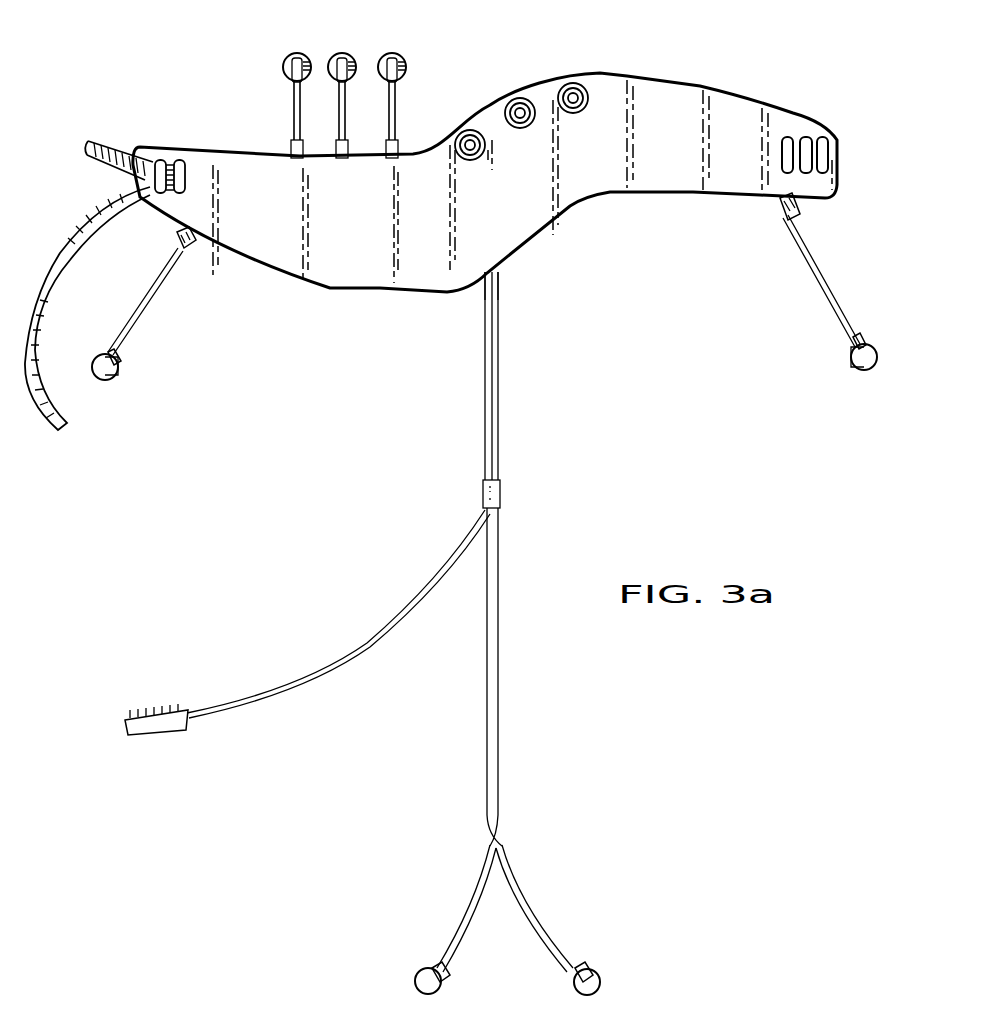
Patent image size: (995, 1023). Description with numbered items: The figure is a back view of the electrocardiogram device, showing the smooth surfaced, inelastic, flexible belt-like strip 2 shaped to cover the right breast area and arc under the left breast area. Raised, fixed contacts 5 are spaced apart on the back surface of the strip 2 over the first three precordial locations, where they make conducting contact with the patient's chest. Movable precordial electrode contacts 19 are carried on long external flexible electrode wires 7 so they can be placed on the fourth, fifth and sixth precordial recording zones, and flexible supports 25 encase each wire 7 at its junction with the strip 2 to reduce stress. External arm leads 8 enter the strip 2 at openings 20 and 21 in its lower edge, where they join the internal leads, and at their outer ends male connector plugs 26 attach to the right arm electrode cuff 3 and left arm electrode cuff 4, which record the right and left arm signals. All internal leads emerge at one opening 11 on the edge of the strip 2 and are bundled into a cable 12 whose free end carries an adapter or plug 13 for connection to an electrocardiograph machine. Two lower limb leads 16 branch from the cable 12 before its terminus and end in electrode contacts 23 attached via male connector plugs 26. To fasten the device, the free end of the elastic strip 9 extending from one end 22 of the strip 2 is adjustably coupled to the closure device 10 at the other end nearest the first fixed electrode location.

The belt-like strip 2 is at (553, 205).
The right arm electrode cuff 3 is at (851, 364).
The left arm electrode cuff 4 is at (106, 382).
The fixed contacts 5 is at (470, 150).
The external flexible electrode wires 7 is at (293, 98).
The external arm leads 8 is at (140, 297).
The elastic strip 9 is at (82, 215).
The closure device 10 is at (805, 140).
The opening 11 is at (478, 285).
The cable 12 is at (500, 322).
The adapter or plug 13 is at (180, 708).
The lower limb leads 16 is at (487, 688).
The movable precordial electrode contacts 19 is at (285, 64).
The opening 20 is at (782, 220).
The opening 21 is at (190, 246).
The end of the belt-like strip 22 is at (160, 162).
The electrode contacts 23 is at (418, 973).
The flexible supports 25 is at (386, 148).
The male connector plugs 26 is at (108, 356).